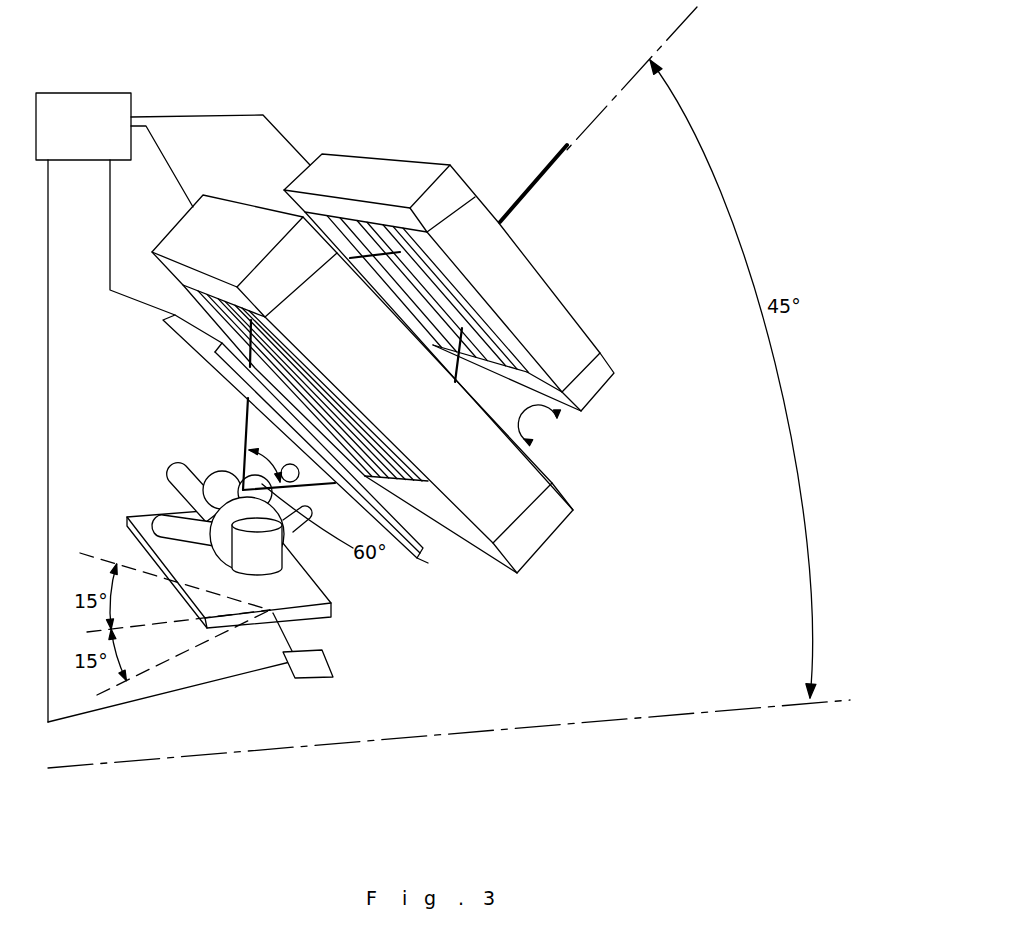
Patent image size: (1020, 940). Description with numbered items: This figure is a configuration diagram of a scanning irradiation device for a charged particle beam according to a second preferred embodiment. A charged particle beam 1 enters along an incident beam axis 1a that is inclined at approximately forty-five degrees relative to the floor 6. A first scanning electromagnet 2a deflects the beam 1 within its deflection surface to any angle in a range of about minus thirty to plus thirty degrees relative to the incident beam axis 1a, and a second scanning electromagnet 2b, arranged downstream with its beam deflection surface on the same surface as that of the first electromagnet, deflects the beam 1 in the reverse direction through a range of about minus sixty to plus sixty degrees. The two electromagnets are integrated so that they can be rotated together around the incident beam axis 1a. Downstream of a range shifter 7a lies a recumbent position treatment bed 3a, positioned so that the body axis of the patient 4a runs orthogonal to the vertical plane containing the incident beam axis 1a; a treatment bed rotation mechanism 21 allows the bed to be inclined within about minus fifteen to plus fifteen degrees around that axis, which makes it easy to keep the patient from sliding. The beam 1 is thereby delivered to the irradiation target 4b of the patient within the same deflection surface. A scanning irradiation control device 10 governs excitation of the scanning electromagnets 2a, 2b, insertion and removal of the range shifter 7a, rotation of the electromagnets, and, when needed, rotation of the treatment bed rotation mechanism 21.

The scanning irradiation control device 10 is at (100, 93).
The charged particle beam 1 is at (506, 208).
The incident beam axis 1a is at (568, 147).
The first scanning electromagnet 2a is at (582, 323).
The second scanning electromagnet 2b is at (530, 472).
The recumbent position treatment bed 3a is at (329, 603).
The patient 4a is at (170, 481).
The irradiation target 4b is at (241, 489).
The floor 6 is at (627, 717).
The range shifter 7a is at (427, 552).
The treatment bed rotation mechanism 21 is at (331, 670).